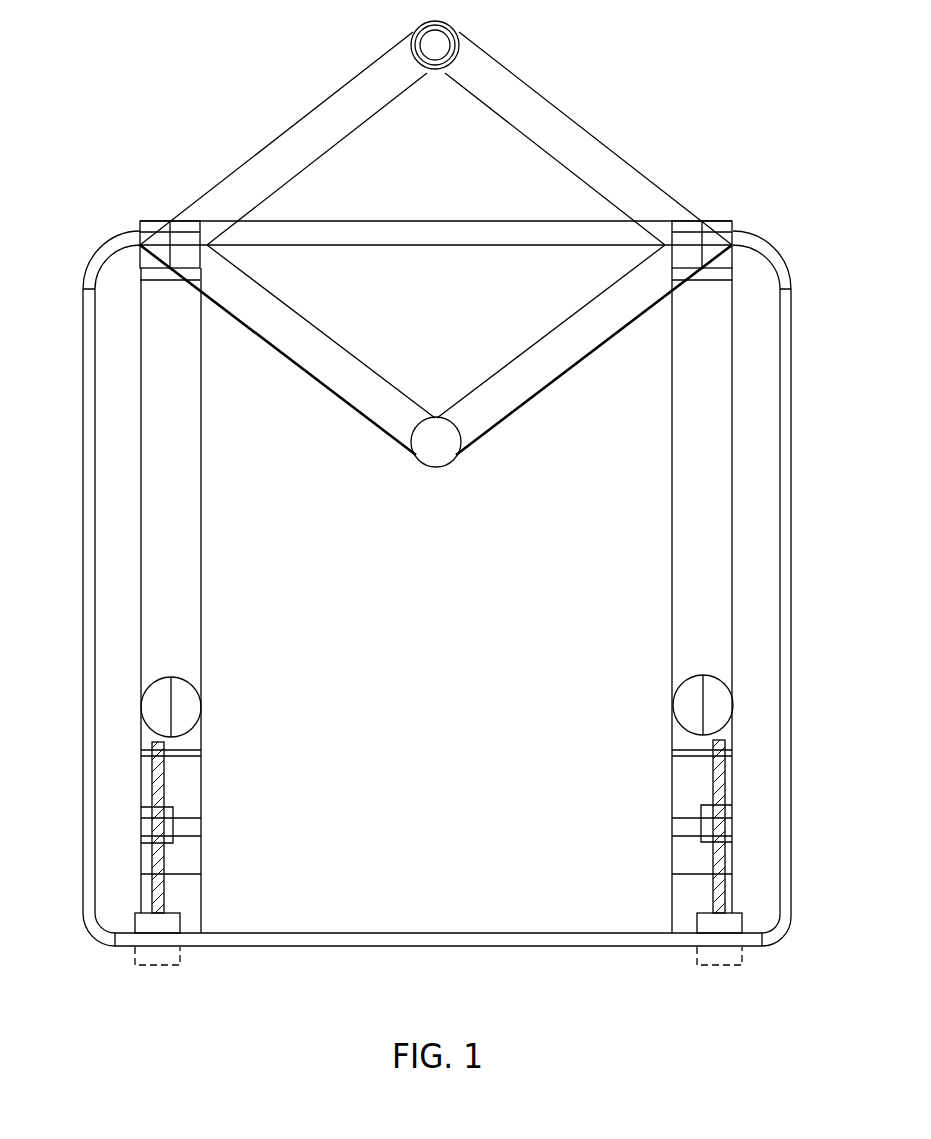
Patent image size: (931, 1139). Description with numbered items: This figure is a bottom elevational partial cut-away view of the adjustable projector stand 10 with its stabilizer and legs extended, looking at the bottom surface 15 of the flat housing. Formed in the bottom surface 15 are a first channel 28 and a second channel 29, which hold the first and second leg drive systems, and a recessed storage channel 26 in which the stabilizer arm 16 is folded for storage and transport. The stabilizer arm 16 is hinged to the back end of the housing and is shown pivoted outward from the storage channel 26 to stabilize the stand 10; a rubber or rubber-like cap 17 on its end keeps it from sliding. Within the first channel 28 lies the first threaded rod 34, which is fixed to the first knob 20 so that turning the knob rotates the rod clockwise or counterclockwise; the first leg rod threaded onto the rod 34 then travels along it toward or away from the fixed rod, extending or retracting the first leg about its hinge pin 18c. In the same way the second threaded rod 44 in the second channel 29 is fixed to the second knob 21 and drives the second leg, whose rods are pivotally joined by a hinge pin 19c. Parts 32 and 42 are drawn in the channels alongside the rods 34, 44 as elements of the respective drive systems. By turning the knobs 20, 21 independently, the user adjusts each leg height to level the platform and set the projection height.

The projector stand 10 is at (702, 118).
The bottom surface 15 is at (456, 600).
The stabilizer arm 16 is at (328, 112).
The cap 17 is at (428, 38).
The hinge pin 18c is at (188, 713).
The right roller 19c is at (688, 707).
The first knob 20 is at (180, 925).
The second knob 21 is at (717, 927).
The storage channel 26 is at (320, 358).
The first channel 28 is at (185, 550).
The second channel 29 is at (688, 552).
The left clamp block 32 is at (202, 830).
The first threaded rod 34 is at (163, 900).
The right clamp block 42 is at (683, 823).
The second threaded rod 44 is at (713, 895).